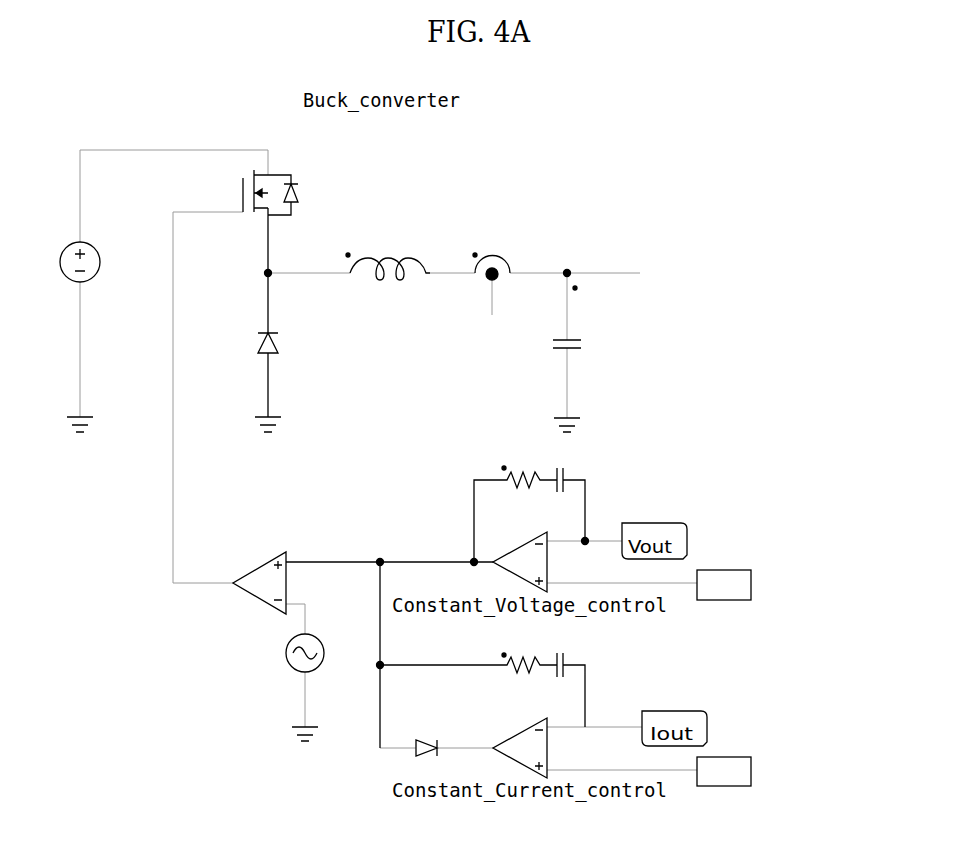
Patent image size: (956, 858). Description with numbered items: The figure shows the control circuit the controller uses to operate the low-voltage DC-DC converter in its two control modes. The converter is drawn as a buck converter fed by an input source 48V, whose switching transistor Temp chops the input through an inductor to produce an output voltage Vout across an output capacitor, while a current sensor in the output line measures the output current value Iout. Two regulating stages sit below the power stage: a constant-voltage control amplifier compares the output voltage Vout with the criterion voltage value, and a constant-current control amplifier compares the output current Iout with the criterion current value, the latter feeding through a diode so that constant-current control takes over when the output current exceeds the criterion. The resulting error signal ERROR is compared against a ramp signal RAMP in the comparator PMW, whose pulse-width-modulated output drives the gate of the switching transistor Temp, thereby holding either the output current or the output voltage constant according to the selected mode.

The 48V DC input voltage source 48V is at (100, 337).
The switching transistor (MOSFET) with temperature sensing Temp is at (278, 221).
The output current value Iout is at (474, 315).
The output voltage node / output capacitor Vout is at (640, 257).
The PWM comparator PMW is at (235, 583).
The error signal node ERROR is at (389, 552).
The ramp signal generator RAMP is at (280, 687).